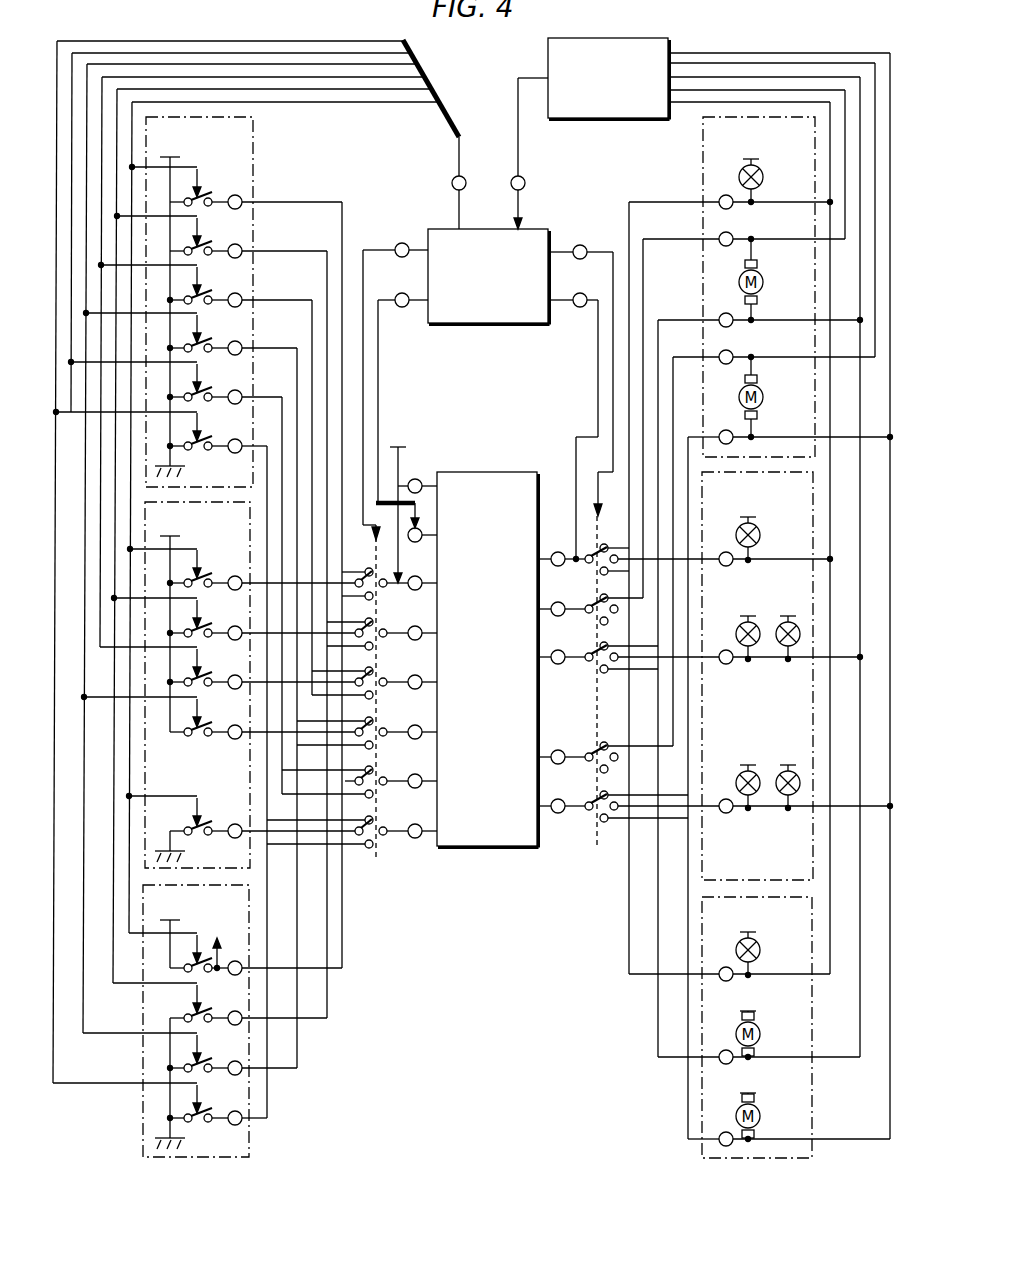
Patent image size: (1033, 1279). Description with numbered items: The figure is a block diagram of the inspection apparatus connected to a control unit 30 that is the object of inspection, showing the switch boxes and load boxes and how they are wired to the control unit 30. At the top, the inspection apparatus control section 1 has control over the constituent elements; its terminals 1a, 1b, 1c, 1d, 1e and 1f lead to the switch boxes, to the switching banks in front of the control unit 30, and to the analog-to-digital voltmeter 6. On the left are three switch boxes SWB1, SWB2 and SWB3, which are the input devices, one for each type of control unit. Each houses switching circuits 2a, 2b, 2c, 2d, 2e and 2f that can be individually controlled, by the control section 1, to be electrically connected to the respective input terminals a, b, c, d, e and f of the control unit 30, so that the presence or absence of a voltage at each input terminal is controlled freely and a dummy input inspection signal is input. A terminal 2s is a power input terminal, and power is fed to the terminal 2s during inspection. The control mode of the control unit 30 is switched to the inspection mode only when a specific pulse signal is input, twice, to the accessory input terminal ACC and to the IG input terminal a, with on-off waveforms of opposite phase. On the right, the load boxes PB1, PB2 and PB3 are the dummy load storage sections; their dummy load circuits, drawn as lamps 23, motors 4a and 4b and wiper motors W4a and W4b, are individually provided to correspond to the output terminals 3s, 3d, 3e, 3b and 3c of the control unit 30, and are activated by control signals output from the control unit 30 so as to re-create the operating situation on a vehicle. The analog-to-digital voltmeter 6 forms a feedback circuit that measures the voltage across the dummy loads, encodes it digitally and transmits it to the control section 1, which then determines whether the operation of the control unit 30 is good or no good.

The inspection apparatus control section 1 is at (488, 324).
The terminal 1a is at (452, 183).
The terminal 1b is at (398, 244).
The terminal 1c is at (405, 307).
The terminal 1d is at (577, 307).
The terminal 1e is at (584, 245).
The terminal 1f is at (525, 183).
The analog-to-digital voltmeter 6 is at (605, 120).
The control unit 30 is at (488, 472).
The lamp 23 is at (763, 175).
The motor 4a is at (763, 278).
The motor 4b is at (763, 393).
The switching circuit 2a is at (205, 207).
The switching circuit 2b is at (205, 256).
The switching circuit 2c is at (205, 305).
The switching circuit 2d is at (205, 353).
The switching circuit 2e is at (205, 402).
The switching circuit 2f is at (205, 451).
The power input terminal 2s is at (413, 504).
The output terminal 3s is at (628, 553).
The output terminal 3d is at (590, 603).
The output terminal 3e is at (628, 651).
The output terminal 3b is at (605, 751).
The output terminal 3c is at (628, 800).
The wiper motor W4a is at (760, 1032).
The wiper motor W4b is at (760, 1114).
The switch box SWB1 is at (199, 302).
The switch box SWB2 is at (197, 685).
The switch box SWB3 is at (196, 1021).
The part block PB1 is at (798, 287).
The part block PB2 is at (797, 676).
The part block PB3 is at (796, 1027).
The accessory input terminal ACC is at (422, 527).
The IG input terminal a is at (396, 578).
The input terminal b is at (396, 628).
The input terminal c is at (396, 677).
The input terminal d is at (396, 727).
The input terminal e is at (396, 776).
The input terminal f is at (396, 826).